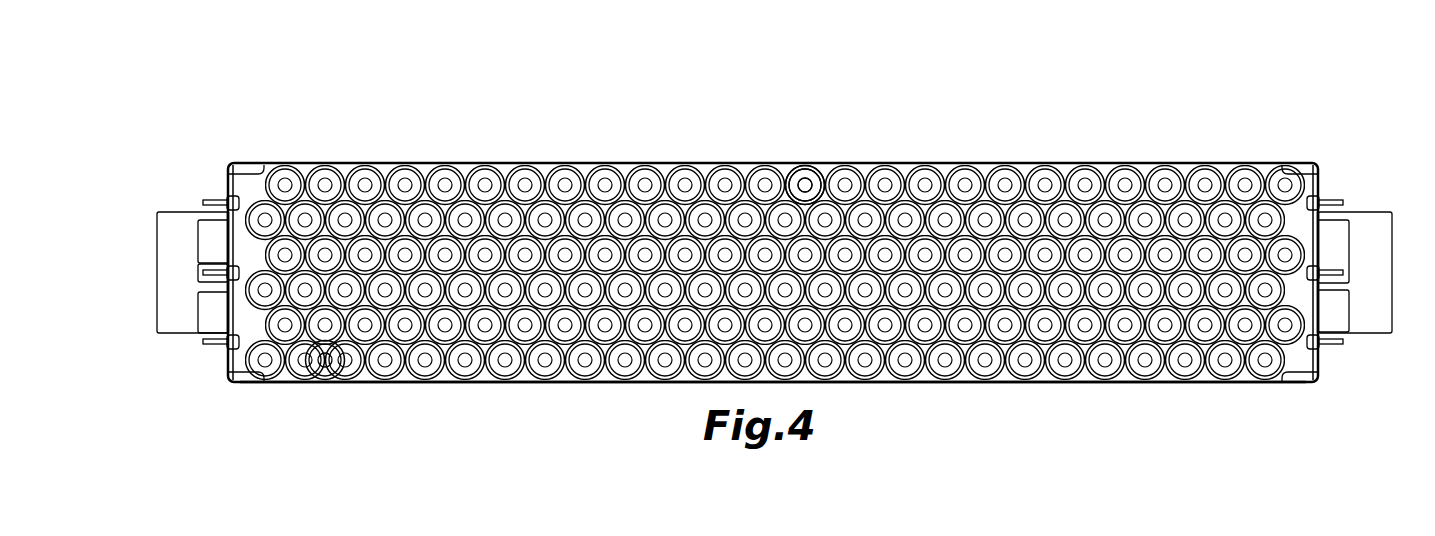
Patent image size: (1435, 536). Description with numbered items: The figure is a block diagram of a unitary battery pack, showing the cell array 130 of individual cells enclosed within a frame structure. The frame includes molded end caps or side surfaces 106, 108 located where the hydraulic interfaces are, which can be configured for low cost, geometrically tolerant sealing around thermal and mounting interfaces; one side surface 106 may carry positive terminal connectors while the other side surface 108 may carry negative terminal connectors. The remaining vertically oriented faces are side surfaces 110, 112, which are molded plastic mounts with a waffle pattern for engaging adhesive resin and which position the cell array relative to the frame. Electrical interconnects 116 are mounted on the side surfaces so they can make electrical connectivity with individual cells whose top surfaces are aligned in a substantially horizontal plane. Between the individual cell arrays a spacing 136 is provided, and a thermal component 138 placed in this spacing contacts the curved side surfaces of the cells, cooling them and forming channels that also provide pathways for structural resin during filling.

The side surface 106 is at (229, 168).
The side surface 108 is at (1318, 177).
The side surface 110 is at (820, 384).
The side surface 112 is at (1000, 163).
The electrical interconnect 116 is at (181, 275).
The cell array 130 is at (815, 192).
The spacing 136 is at (333, 343).
The thermal component 138 is at (1322, 203).